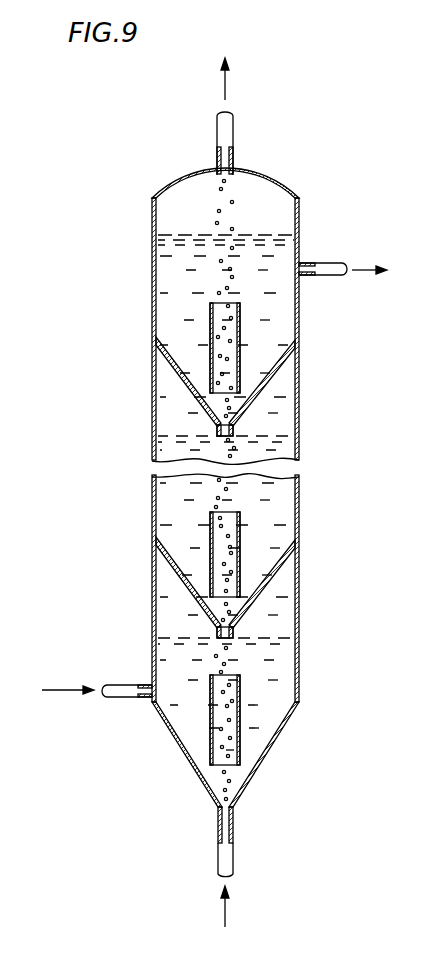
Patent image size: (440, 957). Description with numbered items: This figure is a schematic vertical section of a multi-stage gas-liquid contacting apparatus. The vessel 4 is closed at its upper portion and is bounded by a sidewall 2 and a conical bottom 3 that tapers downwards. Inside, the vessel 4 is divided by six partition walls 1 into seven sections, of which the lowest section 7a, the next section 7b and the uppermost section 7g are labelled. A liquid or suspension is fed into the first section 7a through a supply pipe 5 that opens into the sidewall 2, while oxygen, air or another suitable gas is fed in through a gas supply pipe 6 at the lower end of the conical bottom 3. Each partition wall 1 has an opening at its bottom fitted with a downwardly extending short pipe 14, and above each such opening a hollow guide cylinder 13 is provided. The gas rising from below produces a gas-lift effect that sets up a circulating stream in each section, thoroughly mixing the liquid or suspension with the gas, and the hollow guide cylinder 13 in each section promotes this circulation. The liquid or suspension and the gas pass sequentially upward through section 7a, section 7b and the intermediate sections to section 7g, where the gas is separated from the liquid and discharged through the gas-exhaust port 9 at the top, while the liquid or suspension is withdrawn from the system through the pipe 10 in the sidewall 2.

The partition wall 1 is at (262, 392).
The sidewall 2 is at (152, 405).
The conical bottom 3 is at (250, 775).
The vessel 4 is at (152, 275).
The supply pipe 5 is at (121, 684).
The gas supply pipe 6 is at (218, 855).
The section 7a is at (178, 722).
The section 7b is at (170, 510).
The section 7g is at (164, 313).
The gas-exhaust port 9 is at (227, 128).
The pipe 10 is at (336, 263).
The hollow guide cylinder 13 is at (240, 335).
The short pipe 14 is at (235, 431).